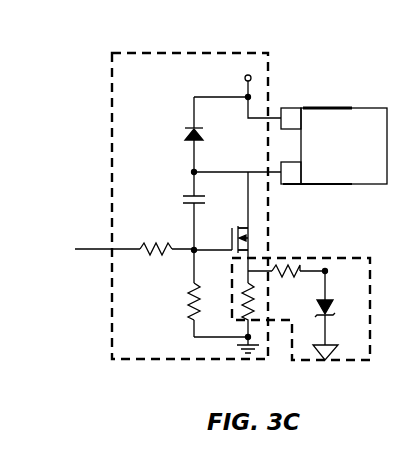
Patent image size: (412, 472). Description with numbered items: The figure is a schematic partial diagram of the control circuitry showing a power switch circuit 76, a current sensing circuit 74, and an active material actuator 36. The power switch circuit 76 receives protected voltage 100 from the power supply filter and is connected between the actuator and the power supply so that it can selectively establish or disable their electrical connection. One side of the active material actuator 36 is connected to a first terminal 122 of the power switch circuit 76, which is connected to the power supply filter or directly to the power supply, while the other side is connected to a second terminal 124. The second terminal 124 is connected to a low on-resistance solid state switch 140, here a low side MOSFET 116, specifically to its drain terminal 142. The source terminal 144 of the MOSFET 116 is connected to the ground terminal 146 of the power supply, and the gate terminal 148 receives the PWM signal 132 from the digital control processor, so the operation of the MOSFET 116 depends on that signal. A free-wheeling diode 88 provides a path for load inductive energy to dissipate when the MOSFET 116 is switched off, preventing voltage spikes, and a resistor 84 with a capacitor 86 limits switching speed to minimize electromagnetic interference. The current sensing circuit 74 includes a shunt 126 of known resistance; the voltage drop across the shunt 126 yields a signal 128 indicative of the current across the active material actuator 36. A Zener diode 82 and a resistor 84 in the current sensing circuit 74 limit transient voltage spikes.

The power switch circuit 76 is at (168, 52).
The current sensing circuit 74 is at (372, 346).
The protected voltage 100 is at (245, 77).
The diode 88 is at (184, 131).
The capacitor 86 is at (184, 195).
The first terminal 122 is at (290, 107).
The second terminal 124 is at (290, 186).
The active material actuator 36 is at (326, 107).
The low on-resistance solid state switch 140 is at (231, 220).
The low side MOSFET 116 is at (232, 237).
The drain terminal 142 is at (250, 228).
The source terminal 144 is at (250, 252).
The PWM signal 132 is at (104, 249).
The resistor 84 is at (157, 256).
The gate terminal 148 is at (215, 256).
The ground terminal 146 is at (235, 339).
The shunt 126 is at (252, 301).
The signal 128 is at (330, 269).
The Zener diode 82 is at (330, 309).